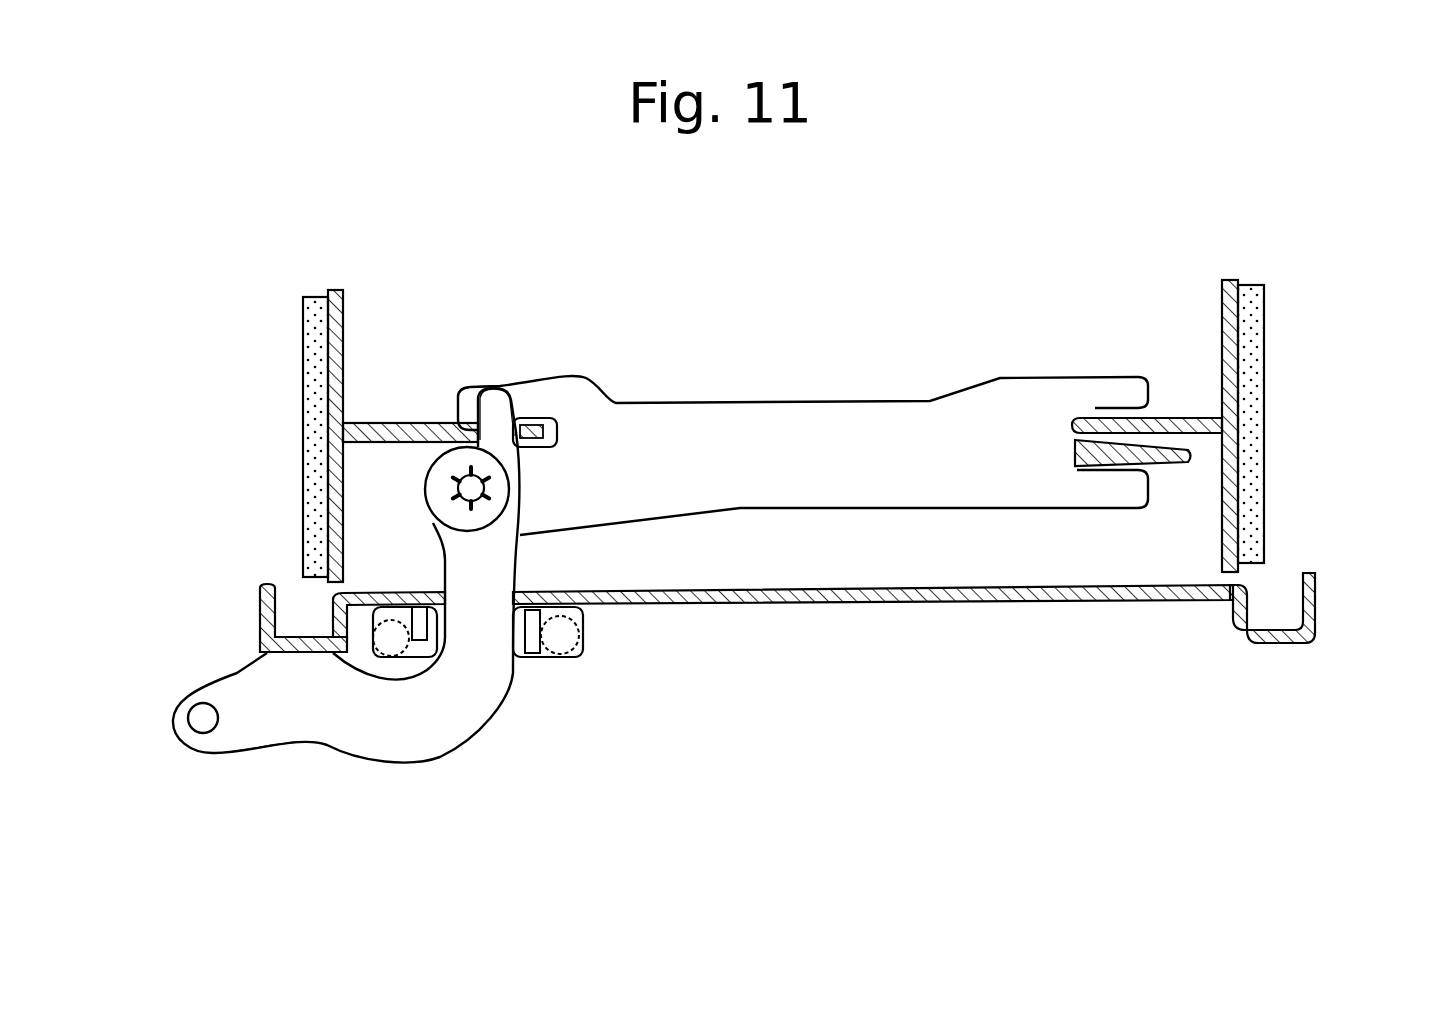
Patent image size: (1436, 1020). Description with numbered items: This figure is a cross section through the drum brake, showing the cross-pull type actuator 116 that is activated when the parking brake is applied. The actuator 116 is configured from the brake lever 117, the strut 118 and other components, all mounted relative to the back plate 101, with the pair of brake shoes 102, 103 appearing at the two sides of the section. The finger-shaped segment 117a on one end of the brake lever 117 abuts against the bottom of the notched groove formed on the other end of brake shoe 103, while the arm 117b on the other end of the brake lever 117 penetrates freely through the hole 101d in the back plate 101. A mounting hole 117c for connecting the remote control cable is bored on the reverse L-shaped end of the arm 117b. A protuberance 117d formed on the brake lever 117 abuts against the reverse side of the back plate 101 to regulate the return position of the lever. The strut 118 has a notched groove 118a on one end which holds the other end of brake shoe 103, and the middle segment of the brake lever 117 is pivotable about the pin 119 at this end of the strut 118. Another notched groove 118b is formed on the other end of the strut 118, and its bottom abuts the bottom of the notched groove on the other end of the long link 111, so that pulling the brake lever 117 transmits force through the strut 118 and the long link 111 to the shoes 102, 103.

The back plate 101 is at (824, 668).
The hole 101d is at (533, 658).
The brake shoe 102 is at (1282, 418).
The brake shoe 103 is at (288, 402).
The long link 111 is at (1175, 464).
The actuator 116 is at (541, 547).
The brake lever 117 is at (350, 562).
The finger-shaped segment 117a is at (497, 397).
The arm 117b is at (295, 738).
The mounting hole 117c is at (203, 733).
The protuberance 117d is at (313, 648).
The strut 118 is at (840, 403).
The notched groove 118a is at (557, 432).
The notched groove 118b is at (1080, 417).
The pin 119 is at (466, 480).